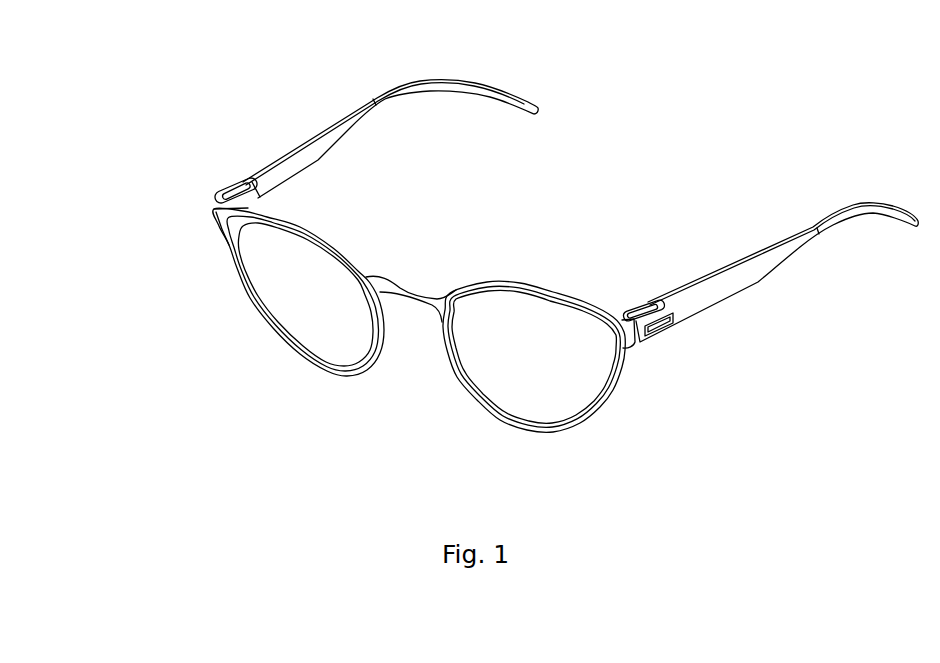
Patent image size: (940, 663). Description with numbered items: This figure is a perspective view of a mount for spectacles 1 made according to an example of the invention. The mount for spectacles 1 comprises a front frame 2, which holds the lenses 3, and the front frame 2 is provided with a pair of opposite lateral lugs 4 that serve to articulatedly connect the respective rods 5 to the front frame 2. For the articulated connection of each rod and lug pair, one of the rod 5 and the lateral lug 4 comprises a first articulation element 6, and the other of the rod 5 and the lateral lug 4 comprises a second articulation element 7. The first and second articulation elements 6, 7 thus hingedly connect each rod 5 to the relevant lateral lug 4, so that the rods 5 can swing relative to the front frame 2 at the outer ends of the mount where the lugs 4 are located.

The mount for spectacles 1 is at (527, 210).
The front frame 2 is at (318, 372).
The lenses 3 is at (291, 297).
The lateral lugs 4 is at (227, 220).
The rods 5 is at (332, 133).
The first articulation element 6 is at (429, 197).
The second articulation element 7 is at (222, 180).